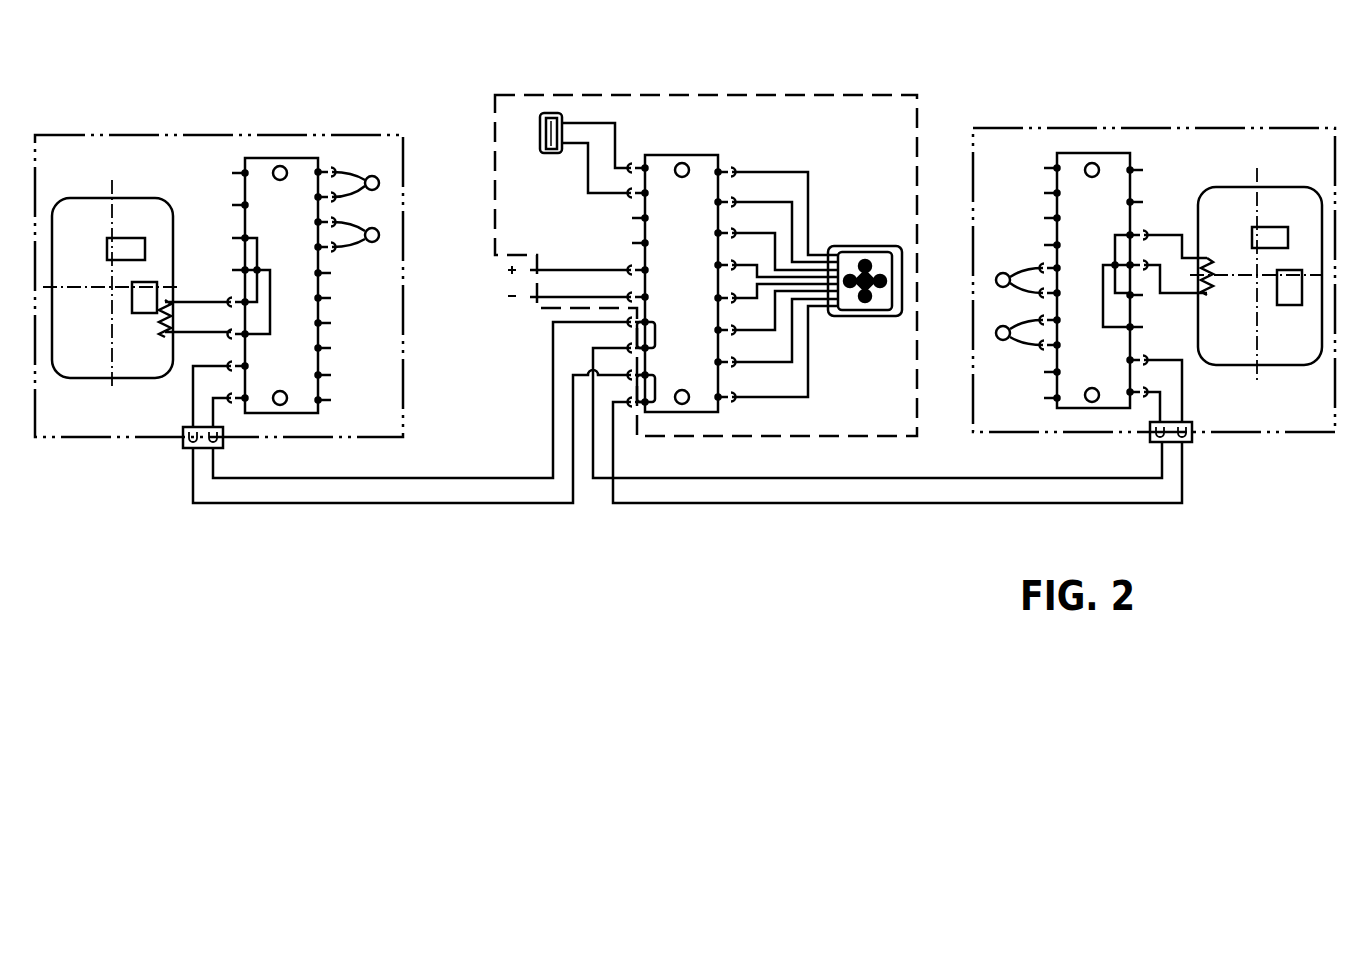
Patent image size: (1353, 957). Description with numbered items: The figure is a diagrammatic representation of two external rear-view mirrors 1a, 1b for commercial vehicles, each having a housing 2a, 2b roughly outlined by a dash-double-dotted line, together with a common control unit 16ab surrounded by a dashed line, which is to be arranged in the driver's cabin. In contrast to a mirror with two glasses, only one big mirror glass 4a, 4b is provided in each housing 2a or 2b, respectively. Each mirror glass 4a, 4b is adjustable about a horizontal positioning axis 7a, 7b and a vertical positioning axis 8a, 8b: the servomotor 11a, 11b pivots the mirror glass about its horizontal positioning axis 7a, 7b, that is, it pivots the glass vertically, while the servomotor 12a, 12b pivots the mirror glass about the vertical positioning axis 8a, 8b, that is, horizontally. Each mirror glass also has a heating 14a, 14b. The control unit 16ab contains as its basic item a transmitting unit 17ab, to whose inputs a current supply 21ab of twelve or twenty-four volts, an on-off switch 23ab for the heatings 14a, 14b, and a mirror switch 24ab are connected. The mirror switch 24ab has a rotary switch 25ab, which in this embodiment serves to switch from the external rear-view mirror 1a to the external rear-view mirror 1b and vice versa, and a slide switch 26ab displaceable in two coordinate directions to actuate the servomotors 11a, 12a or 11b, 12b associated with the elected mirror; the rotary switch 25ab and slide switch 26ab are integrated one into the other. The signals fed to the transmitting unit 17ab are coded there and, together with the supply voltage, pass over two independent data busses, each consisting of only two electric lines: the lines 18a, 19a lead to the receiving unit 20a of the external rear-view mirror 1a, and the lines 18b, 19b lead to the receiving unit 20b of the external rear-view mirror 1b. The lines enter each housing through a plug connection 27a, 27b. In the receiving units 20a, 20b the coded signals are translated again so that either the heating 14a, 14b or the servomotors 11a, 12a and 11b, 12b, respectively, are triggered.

The external rear-view mirror 1a is at (1144, 120).
The external rear-view mirror 1b is at (238, 128).
The housing 2a is at (1228, 128).
The housing 2b is at (133, 135).
The mirror glass 4a is at (1233, 222).
The mirror glass 4b is at (87, 222).
The horizontal positioning axis 7a is at (1240, 272).
The horizontal positioning axis 7b is at (87, 285).
The vertical positioning axis 8a is at (1253, 171).
The vertical positioning axis 8b is at (110, 192).
The servomotor 11a is at (1272, 233).
The servomotor 11b is at (132, 247).
The servomotor 12a is at (1290, 305).
The servomotor 12b is at (145, 315).
The heating 14a is at (1212, 297).
The heating 14b is at (173, 317).
The control unit 16ab is at (700, 90).
The transmitting unit 17ab is at (703, 240).
The line 18a is at (943, 503).
The line 18b is at (445, 507).
The line 19a is at (932, 473).
The line 19b is at (432, 478).
The receiving unit 20a is at (1115, 223).
The receiving unit 20b is at (302, 219).
The current supply 21ab is at (503, 283).
The on-off switch 23ab is at (548, 113).
The mirror switch 24ab is at (861, 326).
The rotary switch 25ab is at (853, 264).
The slide switch 26ab is at (887, 258).
The plug connection 27a is at (1193, 442).
The plug connection 27b is at (183, 446).